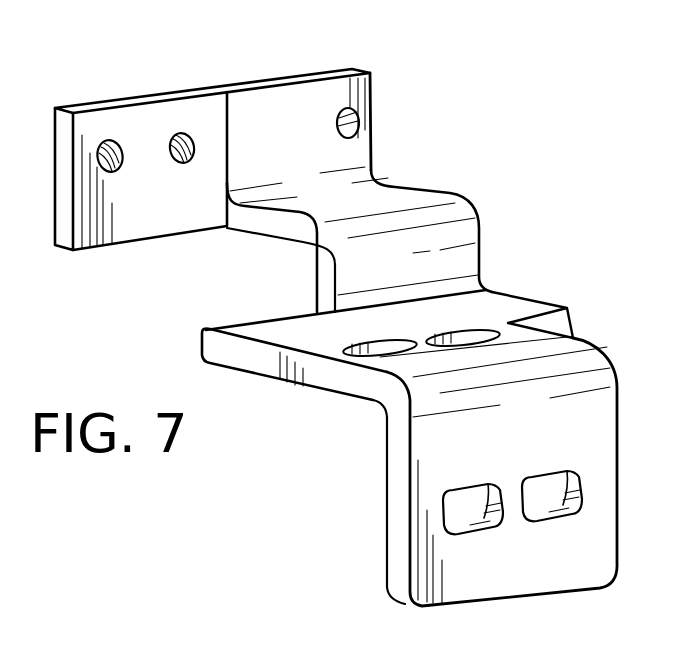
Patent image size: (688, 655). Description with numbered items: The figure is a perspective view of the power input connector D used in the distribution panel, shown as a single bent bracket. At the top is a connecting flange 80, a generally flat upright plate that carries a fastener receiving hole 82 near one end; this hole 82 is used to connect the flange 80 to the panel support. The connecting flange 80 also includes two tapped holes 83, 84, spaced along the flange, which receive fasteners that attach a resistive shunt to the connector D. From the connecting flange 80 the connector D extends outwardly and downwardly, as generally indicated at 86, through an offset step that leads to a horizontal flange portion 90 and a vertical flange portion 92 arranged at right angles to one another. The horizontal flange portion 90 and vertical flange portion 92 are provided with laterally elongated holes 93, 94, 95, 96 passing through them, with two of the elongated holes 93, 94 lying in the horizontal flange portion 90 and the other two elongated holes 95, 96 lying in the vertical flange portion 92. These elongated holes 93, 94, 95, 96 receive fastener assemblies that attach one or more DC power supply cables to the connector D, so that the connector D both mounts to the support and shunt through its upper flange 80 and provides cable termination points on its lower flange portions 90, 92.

The power input connector D is at (402, 77).
The connecting flange 80 is at (255, 108).
The fastener receiving hole 82 is at (358, 127).
The tapped hole 83 is at (115, 138).
The tapped hole 84 is at (187, 133).
The outwardly and downwardly extending portion 86 is at (445, 210).
The horizontal flange portion 90 is at (252, 332).
The vertical flange portion 92 is at (410, 455).
The laterally elongated hole 93 is at (357, 345).
The laterally elongated hole 94 is at (482, 330).
The laterally elongated hole 95 is at (477, 533).
The laterally elongated hole 96 is at (543, 480).